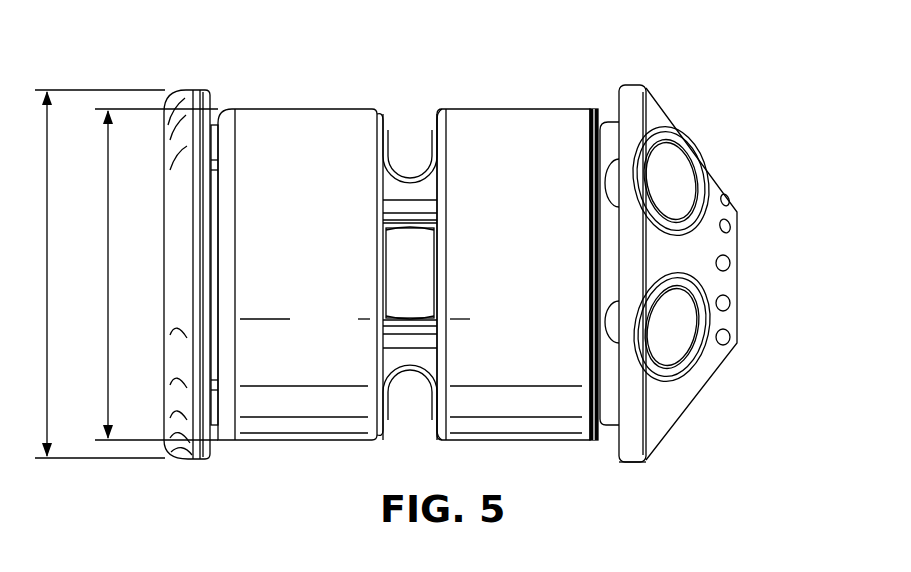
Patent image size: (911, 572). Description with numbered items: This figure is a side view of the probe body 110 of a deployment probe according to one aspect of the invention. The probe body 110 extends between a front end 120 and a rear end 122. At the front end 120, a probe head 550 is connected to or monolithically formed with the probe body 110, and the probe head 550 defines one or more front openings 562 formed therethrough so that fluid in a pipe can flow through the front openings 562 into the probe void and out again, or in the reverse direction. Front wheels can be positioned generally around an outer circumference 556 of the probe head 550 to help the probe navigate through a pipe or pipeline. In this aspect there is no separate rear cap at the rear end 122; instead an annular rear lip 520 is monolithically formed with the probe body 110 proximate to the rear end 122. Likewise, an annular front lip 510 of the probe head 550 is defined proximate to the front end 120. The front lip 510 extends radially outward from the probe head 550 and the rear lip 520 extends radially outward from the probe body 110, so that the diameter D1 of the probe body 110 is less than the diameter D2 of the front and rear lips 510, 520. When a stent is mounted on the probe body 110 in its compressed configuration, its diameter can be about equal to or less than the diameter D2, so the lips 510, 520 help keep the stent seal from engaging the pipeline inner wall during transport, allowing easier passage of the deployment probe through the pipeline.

The probe body 110 is at (522, 128).
The front end 120 is at (598, 93).
The rear end 122 is at (156, 275).
The annular front lip 510 is at (712, 275).
The annular rear lip 520 is at (198, 102).
The probe head 550 is at (700, 253).
The outer circumference 556 is at (632, 450).
The front openings 562 is at (734, 338).
The diameter of the probe body D1 is at (106, 254).
The diameter of the front and rear lips D2 is at (44, 254).